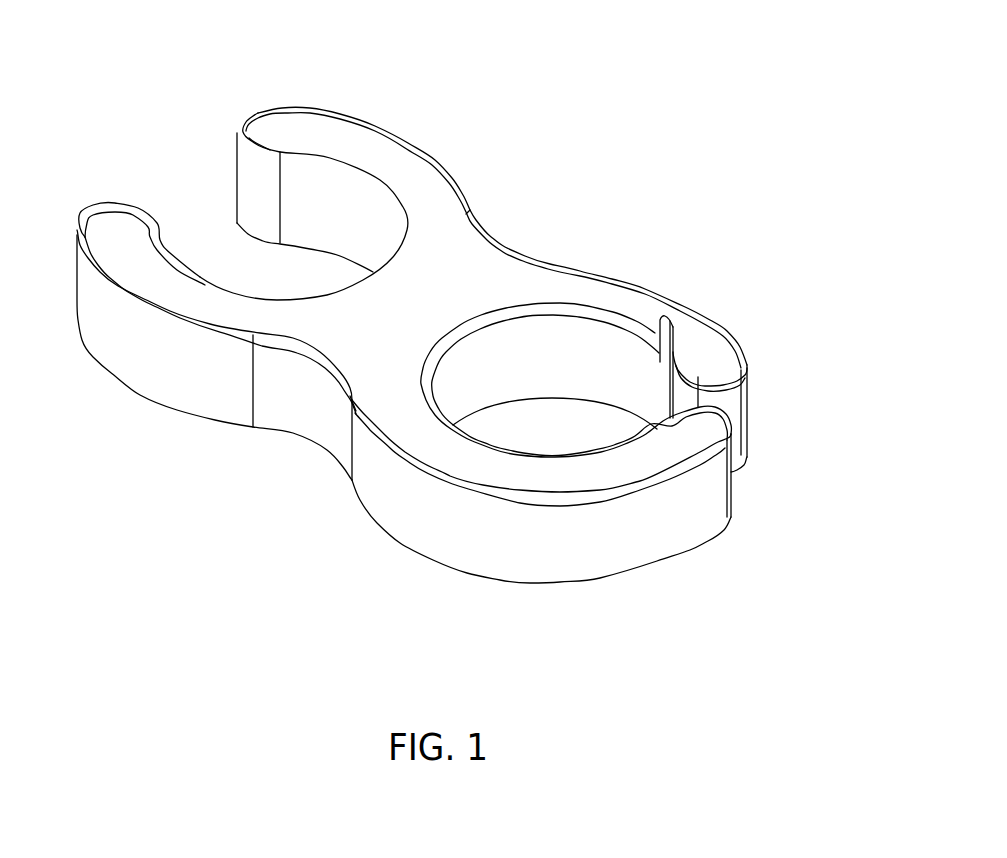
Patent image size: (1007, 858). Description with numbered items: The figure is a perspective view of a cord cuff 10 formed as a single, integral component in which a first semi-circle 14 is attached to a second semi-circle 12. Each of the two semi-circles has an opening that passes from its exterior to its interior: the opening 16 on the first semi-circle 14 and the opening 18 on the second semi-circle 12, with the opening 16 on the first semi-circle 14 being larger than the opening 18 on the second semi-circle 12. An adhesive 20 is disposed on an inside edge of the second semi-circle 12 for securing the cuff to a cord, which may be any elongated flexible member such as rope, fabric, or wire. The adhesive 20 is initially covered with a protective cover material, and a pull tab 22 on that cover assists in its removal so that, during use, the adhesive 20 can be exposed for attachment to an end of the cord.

The cord cuff 10 is at (624, 60).
The second semi-circle 12 is at (533, 537).
The first semi-circle 14 is at (150, 358).
The opening 16 is at (193, 187).
The opening 18 is at (740, 488).
The adhesive 20 is at (567, 352).
The pull tab 22 is at (668, 338).